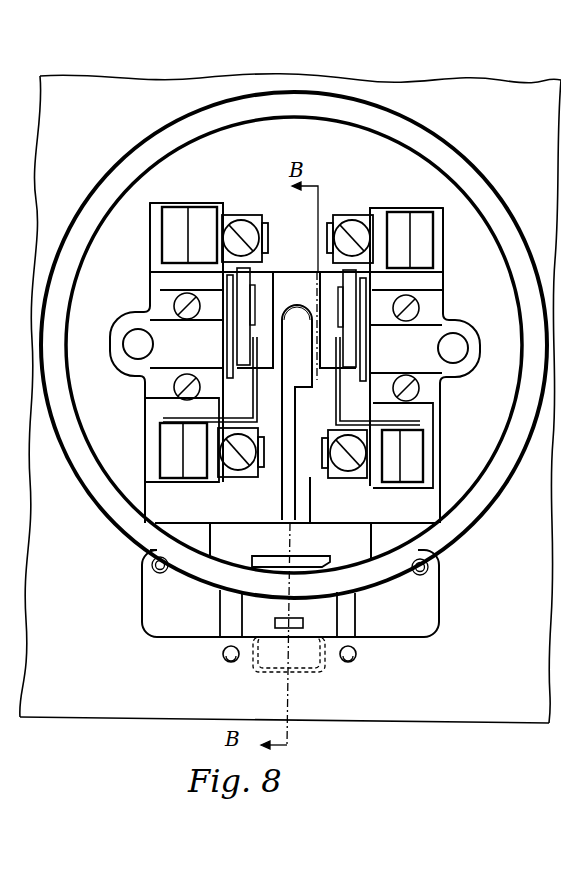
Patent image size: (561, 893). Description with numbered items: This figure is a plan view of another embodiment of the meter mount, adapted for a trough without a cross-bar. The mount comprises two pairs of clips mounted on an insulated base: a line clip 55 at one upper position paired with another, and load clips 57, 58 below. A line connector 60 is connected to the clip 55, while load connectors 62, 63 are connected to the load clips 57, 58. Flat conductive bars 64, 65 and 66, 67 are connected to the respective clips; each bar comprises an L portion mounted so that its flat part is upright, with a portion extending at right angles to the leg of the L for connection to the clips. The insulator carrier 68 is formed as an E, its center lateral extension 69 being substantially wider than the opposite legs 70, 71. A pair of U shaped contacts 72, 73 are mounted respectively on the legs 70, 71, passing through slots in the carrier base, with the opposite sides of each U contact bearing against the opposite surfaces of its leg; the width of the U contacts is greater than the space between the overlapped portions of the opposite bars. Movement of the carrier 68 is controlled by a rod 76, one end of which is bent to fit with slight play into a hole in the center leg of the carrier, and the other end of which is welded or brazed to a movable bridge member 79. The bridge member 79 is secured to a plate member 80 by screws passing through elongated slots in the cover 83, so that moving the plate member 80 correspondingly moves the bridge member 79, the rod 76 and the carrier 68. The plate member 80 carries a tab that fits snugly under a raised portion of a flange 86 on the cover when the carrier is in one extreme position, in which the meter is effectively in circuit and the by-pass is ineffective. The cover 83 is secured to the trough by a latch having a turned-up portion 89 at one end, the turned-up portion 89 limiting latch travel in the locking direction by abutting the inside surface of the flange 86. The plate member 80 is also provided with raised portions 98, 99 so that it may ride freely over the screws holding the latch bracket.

The flange 86 is at (418, 137).
The line connector 60 is at (236, 217).
The clip 55 is at (183, 213).
The flat conductive bar 64 is at (158, 270).
The U shaped contact 72 is at (230, 293).
The leg of insulator carrier 70 is at (243, 357).
The flat conductive bar 66 is at (192, 418).
The clip 57 is at (173, 472).
The load connector 62 is at (236, 476).
The insulator carrier 68 is at (292, 266).
The center lateral extension 69 is at (291, 305).
The rod 76 is at (296, 477).
The flat conductive bar 65 is at (393, 279).
The U shaped contact 73 is at (358, 290).
The leg of insulator carrier 71 is at (347, 343).
The flat conductive bar 67 is at (400, 421).
The clip 58 is at (408, 443).
The load connector 63 is at (352, 480).
The bridge member 79 is at (193, 538).
The plate member 80 is at (440, 600).
The turned-up portion 89 is at (340, 565).
The raised portion 98 is at (228, 608).
The raised portion 99 is at (348, 615).
The cover 83 is at (535, 636).